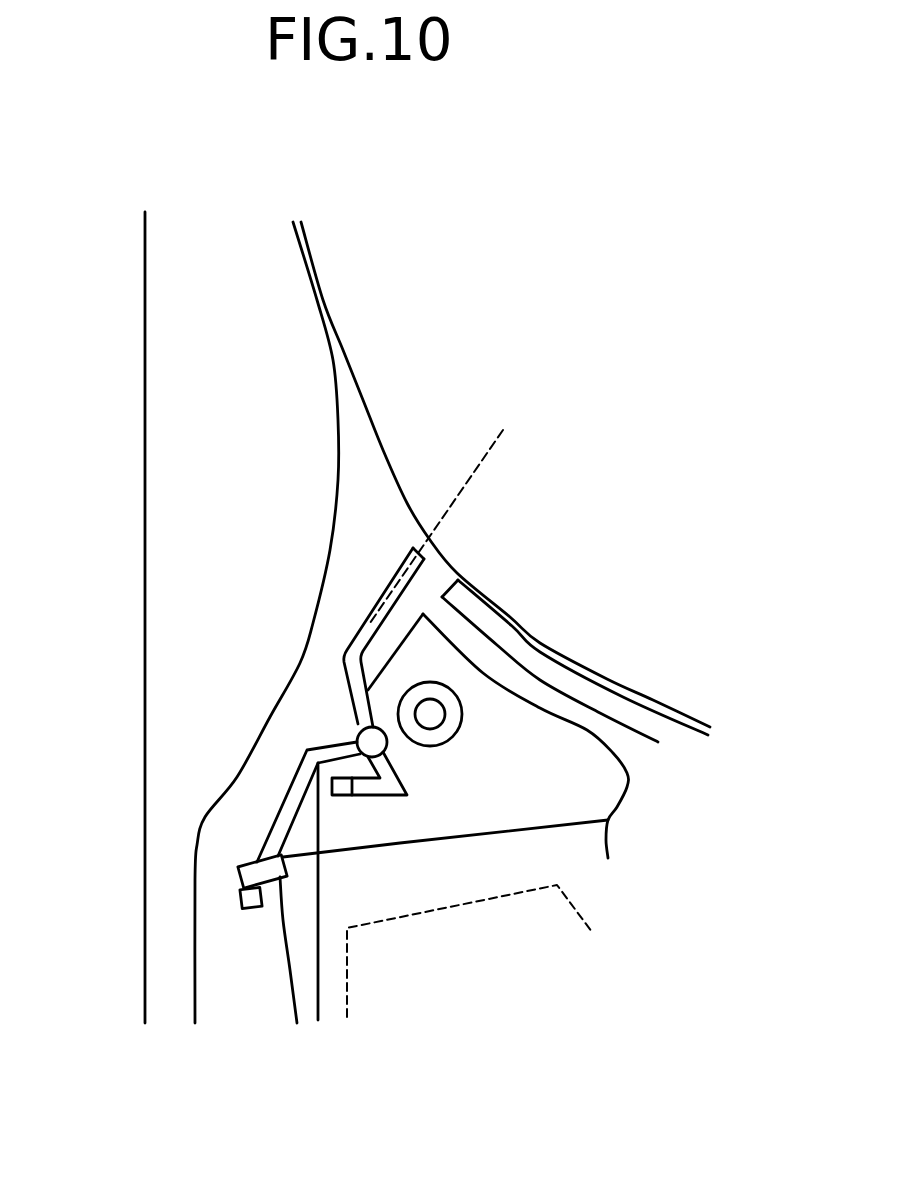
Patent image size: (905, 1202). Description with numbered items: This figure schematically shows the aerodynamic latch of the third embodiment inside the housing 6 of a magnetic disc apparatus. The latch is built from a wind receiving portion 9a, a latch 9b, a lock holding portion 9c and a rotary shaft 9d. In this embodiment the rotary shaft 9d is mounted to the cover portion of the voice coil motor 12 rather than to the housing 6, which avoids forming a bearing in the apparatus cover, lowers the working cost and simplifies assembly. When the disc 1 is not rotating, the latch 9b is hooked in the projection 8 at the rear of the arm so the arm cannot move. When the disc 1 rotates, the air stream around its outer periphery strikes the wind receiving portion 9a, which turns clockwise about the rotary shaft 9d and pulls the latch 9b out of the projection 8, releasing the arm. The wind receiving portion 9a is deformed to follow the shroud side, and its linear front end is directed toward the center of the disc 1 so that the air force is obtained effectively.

The disc 1 is at (515, 620).
The housing 6 is at (188, 478).
The projection 8 is at (247, 863).
The wind receiving portion 9a is at (391, 574).
The latch 9b is at (250, 908).
The lock holding portion 9c is at (343, 790).
The rotary shaft 9d is at (358, 736).
The voice coil motor 12 is at (553, 743).